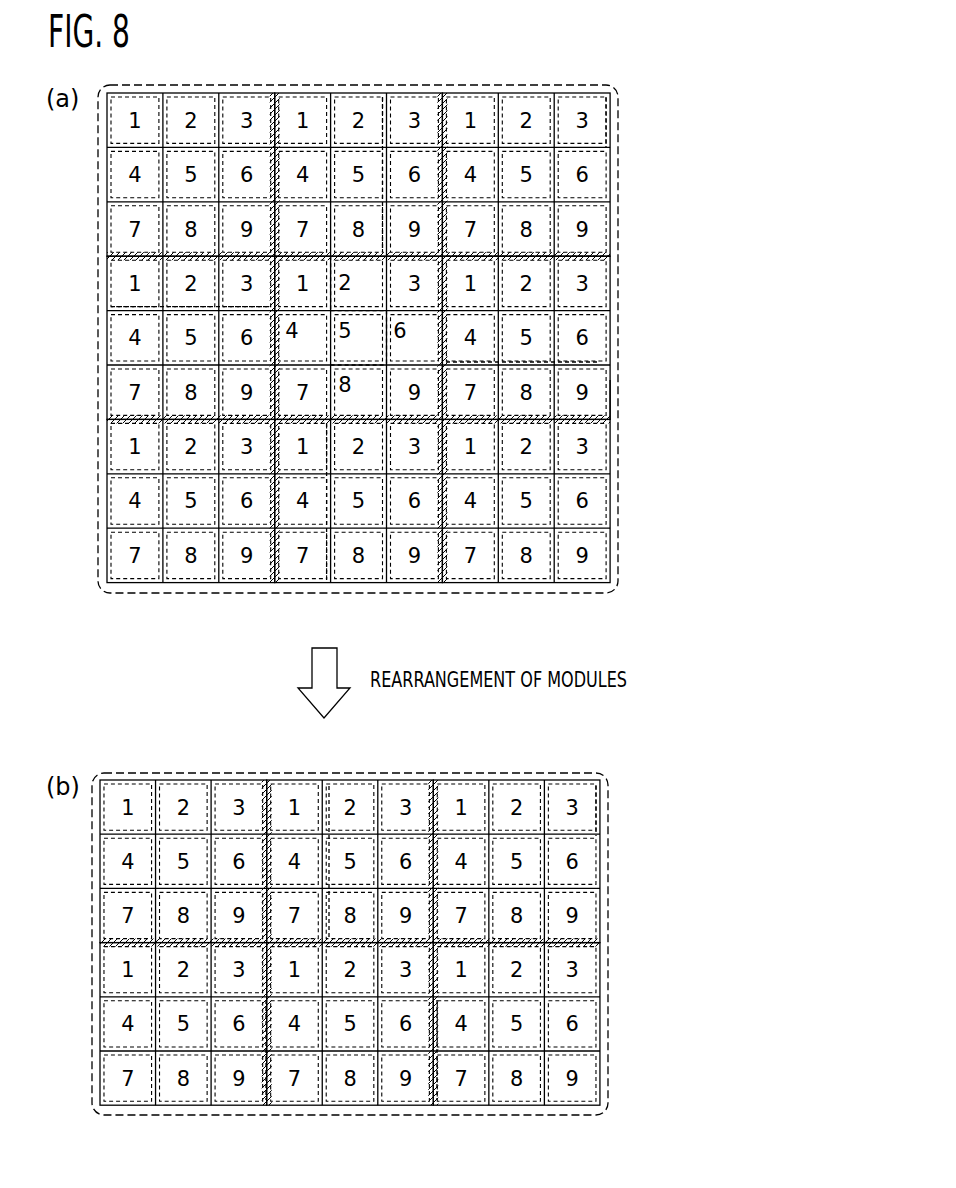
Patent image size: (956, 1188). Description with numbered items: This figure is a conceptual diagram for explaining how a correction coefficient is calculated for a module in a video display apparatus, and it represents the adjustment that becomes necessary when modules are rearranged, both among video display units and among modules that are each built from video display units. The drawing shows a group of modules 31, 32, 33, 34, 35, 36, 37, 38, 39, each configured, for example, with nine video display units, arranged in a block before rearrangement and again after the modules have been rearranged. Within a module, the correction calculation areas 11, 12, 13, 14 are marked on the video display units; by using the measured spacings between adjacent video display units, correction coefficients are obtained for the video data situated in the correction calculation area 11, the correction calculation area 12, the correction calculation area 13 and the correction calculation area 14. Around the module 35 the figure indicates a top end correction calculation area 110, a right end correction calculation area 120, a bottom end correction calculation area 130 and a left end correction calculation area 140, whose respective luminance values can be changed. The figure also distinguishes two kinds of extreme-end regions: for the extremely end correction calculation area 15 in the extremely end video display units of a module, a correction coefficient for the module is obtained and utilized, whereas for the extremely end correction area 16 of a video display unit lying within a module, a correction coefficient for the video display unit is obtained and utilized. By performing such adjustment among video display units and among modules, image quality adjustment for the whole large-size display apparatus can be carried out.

The correction calculation area 11 is at (360, 318).
The correction calculation area 12 is at (385, 285).
The correction calculation area 13 is at (297, 350).
The correction calculation area 14 is at (333, 407).
The extremely end correction calculation area 15 is at (612, 260).
The extremely end correction area 16 is at (600, 837).
The module 31 is at (107, 177).
The module 32 is at (316, 93).
The module 33 is at (612, 215).
The module 34 is at (107, 345).
The module 35 is at (450, 300).
The module 36 is at (613, 398).
The module 37 is at (163, 585).
The module 38 is at (390, 588).
The module 39 is at (520, 588).
The top end correction calculation area 110 is at (376, 250).
The right end correction calculation area 120 is at (450, 357).
The bottom end correction calculation area 130 is at (318, 428).
The left end correction calculation area 140 is at (265, 303).